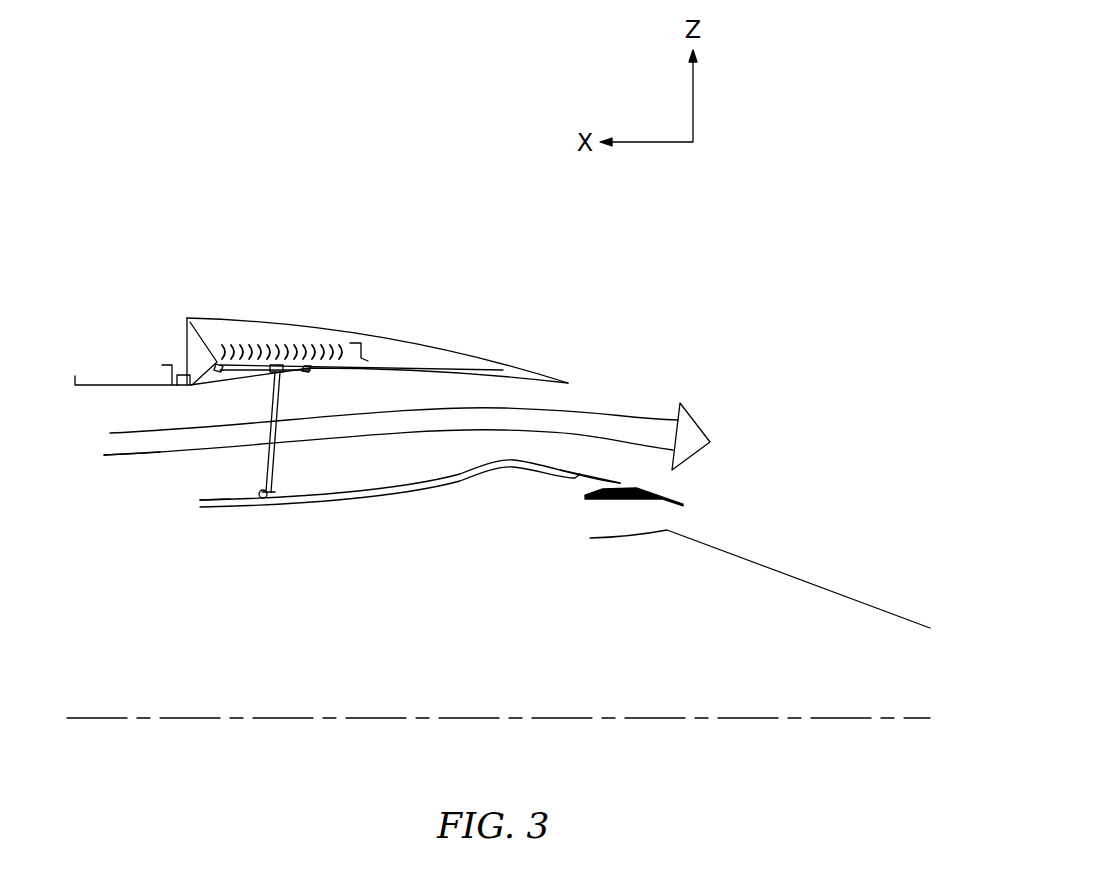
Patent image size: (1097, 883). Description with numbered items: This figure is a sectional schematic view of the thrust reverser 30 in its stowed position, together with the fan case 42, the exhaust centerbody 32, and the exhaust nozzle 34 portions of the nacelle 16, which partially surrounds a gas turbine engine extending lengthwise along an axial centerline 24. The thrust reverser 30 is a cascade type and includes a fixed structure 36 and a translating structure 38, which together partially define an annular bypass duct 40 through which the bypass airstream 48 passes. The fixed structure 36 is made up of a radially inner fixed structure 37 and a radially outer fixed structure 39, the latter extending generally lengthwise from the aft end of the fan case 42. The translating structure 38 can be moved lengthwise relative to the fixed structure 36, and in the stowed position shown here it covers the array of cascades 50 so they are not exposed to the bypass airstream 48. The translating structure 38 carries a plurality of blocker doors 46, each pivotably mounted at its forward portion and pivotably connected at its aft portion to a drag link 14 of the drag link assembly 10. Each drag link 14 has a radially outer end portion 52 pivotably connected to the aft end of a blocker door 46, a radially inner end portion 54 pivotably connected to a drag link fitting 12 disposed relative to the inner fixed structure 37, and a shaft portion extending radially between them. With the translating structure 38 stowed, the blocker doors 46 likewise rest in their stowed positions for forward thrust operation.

The drag link assembly 10 is at (310, 480).
The drag link fitting 12 is at (259, 496).
The drag link 14 is at (312, 462).
The nacelle 16 is at (212, 158).
The axial centerline 24 is at (675, 715).
The thrust reverser 30 is at (281, 218).
The exhaust centerbody 32 is at (770, 565).
The exhaust nozzle 34 is at (667, 500).
The fixed structure 36 is at (188, 288).
The inner fixed structure 37 is at (255, 520).
The translating structure 38 is at (433, 337).
The outer fixed structure 39 is at (177, 309).
The bypass duct 40 is at (388, 467).
The fan case 42 is at (104, 383).
The blocker door 46 is at (227, 387).
The bypass airstream 48 is at (148, 458).
The array of cascades 50 is at (288, 341).
The radially outer end portion 52 is at (280, 386).
The radially inner end portion 54 is at (280, 468).